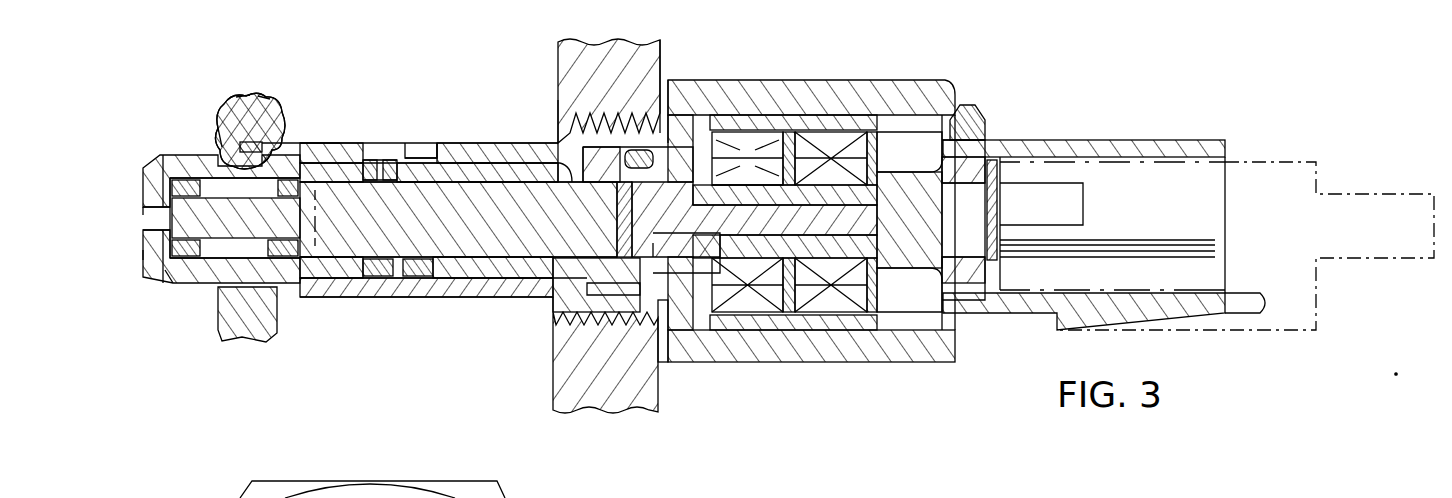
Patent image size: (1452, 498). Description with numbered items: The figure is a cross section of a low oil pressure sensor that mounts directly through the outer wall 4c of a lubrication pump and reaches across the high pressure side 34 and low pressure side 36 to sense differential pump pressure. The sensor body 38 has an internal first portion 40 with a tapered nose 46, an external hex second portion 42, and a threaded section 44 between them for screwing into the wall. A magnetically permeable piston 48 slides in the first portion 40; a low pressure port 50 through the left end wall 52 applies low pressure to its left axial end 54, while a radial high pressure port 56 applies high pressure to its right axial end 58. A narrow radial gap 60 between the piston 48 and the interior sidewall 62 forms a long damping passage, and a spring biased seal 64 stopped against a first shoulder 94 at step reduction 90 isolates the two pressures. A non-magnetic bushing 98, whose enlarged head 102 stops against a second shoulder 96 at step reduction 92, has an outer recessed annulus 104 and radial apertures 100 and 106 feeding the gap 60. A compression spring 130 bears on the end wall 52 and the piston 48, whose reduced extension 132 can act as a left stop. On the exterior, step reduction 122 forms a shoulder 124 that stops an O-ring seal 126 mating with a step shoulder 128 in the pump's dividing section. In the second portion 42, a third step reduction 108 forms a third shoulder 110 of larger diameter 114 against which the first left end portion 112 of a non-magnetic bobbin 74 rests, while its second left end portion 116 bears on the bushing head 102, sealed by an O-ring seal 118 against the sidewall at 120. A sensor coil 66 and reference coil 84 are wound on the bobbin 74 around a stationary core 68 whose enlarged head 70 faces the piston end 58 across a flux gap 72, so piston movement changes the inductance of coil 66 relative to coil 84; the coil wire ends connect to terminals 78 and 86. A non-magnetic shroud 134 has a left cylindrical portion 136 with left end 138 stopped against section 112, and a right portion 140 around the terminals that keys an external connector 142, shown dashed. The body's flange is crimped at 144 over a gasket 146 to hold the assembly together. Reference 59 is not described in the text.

The high pressure side 34 is at (338, 85).
The low pressure side 36 is at (192, 105).
The sensor body 38 is at (668, 88).
The first portion 40 is at (379, 160).
The second portion 42 is at (838, 80).
The threaded section 44 is at (592, 97).
The nose 46 is at (250, 96).
The outer wall 4c is at (594, 52).
The piston 48 is at (353, 240).
The low pressure port 50 is at (145, 223).
The left end wall 52 is at (143, 258).
The left axial end 54 is at (143, 212).
The high pressure port 56 is at (428, 148).
The right axial end 58 is at (617, 228).
The surface 59 is at (509, 183).
The radial gap 60 is at (487, 182).
The interior sidewall 62 is at (325, 263).
The seal 64 is at (390, 160).
The magnetic coil 66 is at (770, 300).
The core 68 is at (795, 223).
The head 70 is at (655, 243).
The flux gap 72 is at (617, 205).
The bobbin 74 is at (737, 196).
The terminal 78 is at (1082, 261).
The second coil 84 is at (851, 304).
The terminal 86 is at (1080, 204).
The step reduction 90 is at (357, 160).
The step reduction 92 is at (581, 148).
The first shoulder 94 is at (330, 143).
The second shoulder 96 is at (577, 219).
The bushing 98 is at (474, 172).
The aperture 100 is at (418, 183).
The head 102 is at (582, 145).
The annulus 104 is at (428, 278).
The aperture 106 is at (418, 265).
The third step reduction 108 is at (689, 103).
The third shoulder 110 is at (655, 103).
The first left end portion 112 is at (722, 138).
The larger diameter 114 is at (729, 113).
The second left end portion 116 is at (650, 170).
The O-ring seal 118 is at (683, 308).
The interior sidewall location 120 is at (640, 300).
The step reduction 122 is at (225, 170).
The shoulder 124 is at (263, 97).
The O-ring seal 126 is at (247, 98).
The step shoulder 128 is at (222, 150).
The compression spring 130 is at (176, 270).
The extension 132 is at (278, 227).
The shroud 134 is at (951, 118).
The left cylindrical portion 136 is at (797, 122).
The left end 138 is at (728, 325).
The right portion 140 is at (1114, 139).
The external connector 142 is at (1251, 160).
The crimp 144 is at (976, 137).
The gasket 146 is at (970, 118).